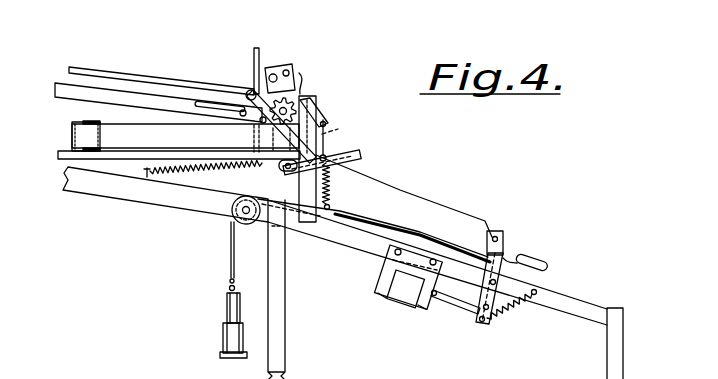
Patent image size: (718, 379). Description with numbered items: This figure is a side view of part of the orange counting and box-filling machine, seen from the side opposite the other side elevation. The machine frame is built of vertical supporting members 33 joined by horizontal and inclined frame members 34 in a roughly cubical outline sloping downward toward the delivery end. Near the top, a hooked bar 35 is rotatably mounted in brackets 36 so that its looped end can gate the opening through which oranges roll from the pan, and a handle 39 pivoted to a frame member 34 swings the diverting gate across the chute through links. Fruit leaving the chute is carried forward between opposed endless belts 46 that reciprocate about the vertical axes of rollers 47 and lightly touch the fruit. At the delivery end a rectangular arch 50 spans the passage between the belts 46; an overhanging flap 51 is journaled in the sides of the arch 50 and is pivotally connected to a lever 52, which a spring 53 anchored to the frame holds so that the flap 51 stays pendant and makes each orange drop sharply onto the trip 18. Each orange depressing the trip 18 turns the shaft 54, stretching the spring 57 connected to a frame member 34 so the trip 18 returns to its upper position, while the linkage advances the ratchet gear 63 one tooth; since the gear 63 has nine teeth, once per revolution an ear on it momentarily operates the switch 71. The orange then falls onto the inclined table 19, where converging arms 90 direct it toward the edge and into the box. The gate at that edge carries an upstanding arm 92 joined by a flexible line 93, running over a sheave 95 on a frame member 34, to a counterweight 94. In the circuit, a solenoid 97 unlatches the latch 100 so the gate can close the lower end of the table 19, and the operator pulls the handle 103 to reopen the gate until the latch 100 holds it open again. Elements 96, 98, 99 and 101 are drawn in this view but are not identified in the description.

The trip 18 is at (352, 151).
The inclined table 19 is at (398, 210).
The vertical supporting members 33 is at (277, 330).
The frame members 34 is at (110, 190).
The hooked bar 35 is at (125, 79).
The brackets 36 is at (256, 57).
The handle 39 is at (170, 100).
The endless belts 46 is at (154, 128).
The rollers 47 is at (81, 121).
The rectangular arch 50 is at (300, 189).
The overhanging flap 51 is at (338, 129).
The lever 52 is at (320, 121).
The spring 53 is at (331, 194).
The shaft 54 is at (283, 168).
The spring 57 is at (190, 172).
The ratchet gear 63 is at (296, 95).
The switch 71 is at (279, 68).
The converging arms 90 is at (466, 222).
The upstanding arm 92 is at (505, 246).
The flexible line 93 is at (428, 220).
The counterweight 94 is at (220, 337).
The sheave 95 is at (238, 218).
The clamp bracket 96 is at (390, 279).
The solenoid 97 is at (398, 291).
The clamp 98 is at (422, 310).
The rod 99 is at (445, 299).
The latch 100 is at (484, 323).
The spring 101 is at (513, 304).
The handle 103 is at (532, 264).